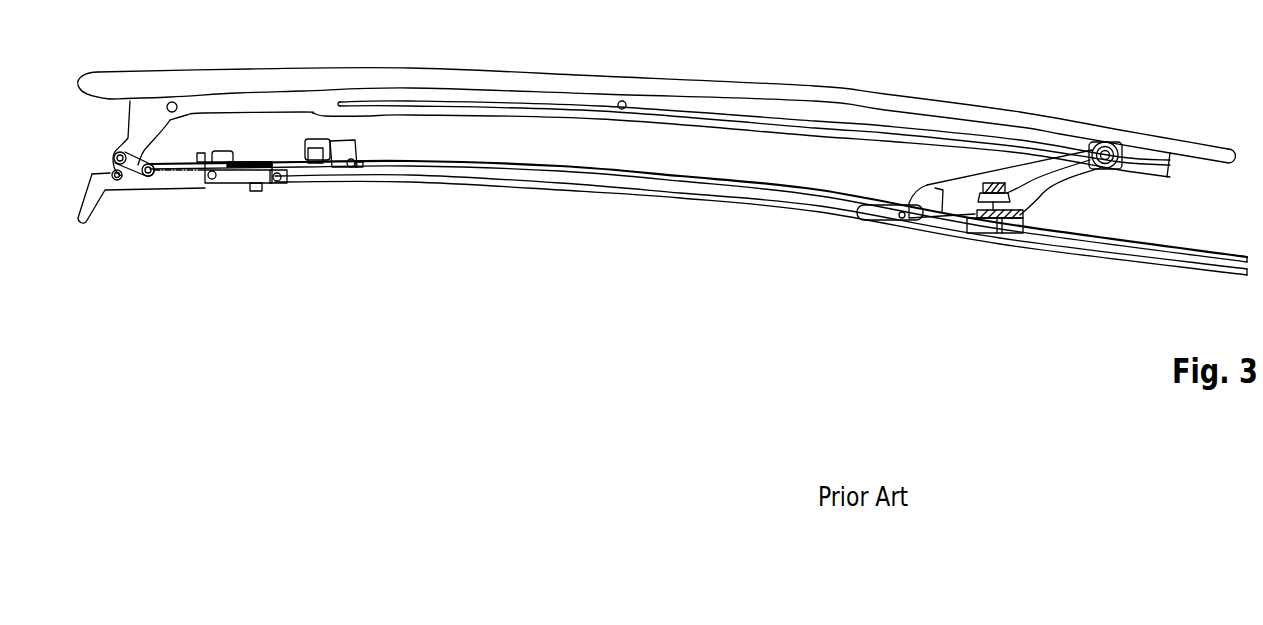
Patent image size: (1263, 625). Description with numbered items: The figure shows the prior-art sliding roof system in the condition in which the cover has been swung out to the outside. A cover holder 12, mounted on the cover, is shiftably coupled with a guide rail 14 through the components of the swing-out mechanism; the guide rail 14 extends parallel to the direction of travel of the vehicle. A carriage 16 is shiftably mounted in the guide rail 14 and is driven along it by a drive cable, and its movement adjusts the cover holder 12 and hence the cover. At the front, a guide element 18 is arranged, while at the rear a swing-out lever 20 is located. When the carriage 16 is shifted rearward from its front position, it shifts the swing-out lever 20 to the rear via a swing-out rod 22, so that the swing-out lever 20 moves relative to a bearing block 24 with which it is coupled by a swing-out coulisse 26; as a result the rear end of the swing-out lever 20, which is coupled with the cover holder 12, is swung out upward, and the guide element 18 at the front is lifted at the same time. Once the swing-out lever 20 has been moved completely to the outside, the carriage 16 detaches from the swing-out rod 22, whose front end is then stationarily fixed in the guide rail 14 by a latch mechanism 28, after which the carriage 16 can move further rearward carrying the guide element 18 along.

The cover holder 12 is at (713, 103).
The guide rail 14 is at (665, 191).
The carriage 16 is at (313, 167).
The guide element 18 is at (132, 138).
The swing-out lever 20 is at (953, 200).
The swing-out rod 22 is at (500, 163).
The bearing block 24 is at (1028, 210).
The swing-out coulisse 26 is at (1040, 178).
The latch mechanism 28 is at (258, 191).